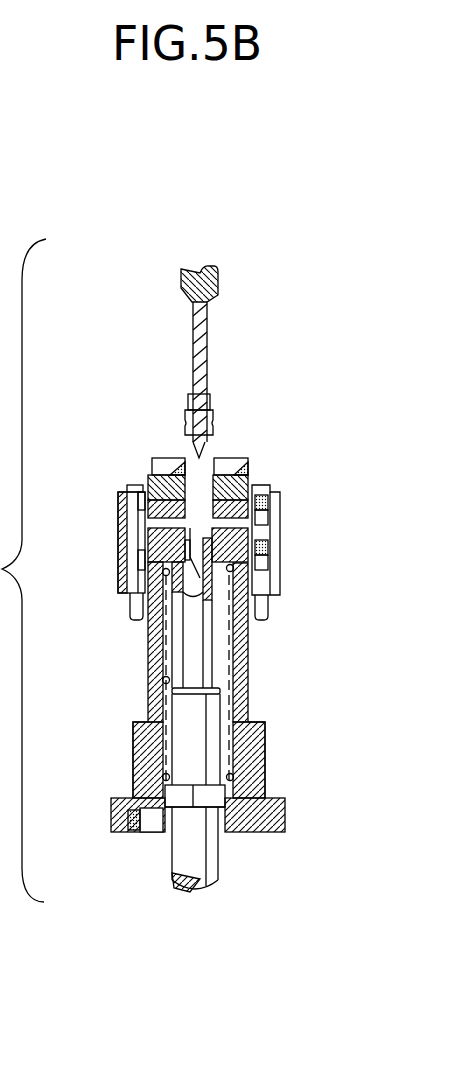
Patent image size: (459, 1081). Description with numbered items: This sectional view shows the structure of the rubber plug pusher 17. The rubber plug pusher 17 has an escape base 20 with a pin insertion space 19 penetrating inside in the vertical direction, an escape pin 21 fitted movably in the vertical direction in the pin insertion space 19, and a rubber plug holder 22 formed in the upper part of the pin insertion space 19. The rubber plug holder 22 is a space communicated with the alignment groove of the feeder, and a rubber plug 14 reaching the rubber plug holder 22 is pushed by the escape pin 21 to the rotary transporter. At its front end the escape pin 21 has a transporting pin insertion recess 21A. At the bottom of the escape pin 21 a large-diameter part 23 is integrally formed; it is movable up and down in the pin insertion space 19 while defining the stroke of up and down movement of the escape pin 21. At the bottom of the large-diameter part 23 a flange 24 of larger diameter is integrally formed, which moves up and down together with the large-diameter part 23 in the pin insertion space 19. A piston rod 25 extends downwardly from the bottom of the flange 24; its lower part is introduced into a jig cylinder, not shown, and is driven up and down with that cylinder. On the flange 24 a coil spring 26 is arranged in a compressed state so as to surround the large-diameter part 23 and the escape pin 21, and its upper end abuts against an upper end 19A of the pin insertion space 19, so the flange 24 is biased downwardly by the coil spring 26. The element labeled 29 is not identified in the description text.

The rubber plug 14 is at (212, 418).
The rubber plug pusher 17 is at (288, 456).
The pin insertion space 19 is at (148, 690).
The upper end of the pin insertion space 19A is at (167, 582).
The escape base 20 is at (133, 722).
The escape pin 21 is at (205, 633).
The transporting pin insertion recess 21A is at (192, 556).
The rubber plug holder 22 is at (188, 496).
The large-diameter part 23 is at (215, 705).
The flange 24 is at (265, 775).
The piston rod 25 is at (207, 860).
The coil spring 26 is at (162, 570).
The needle 29 is at (205, 330).